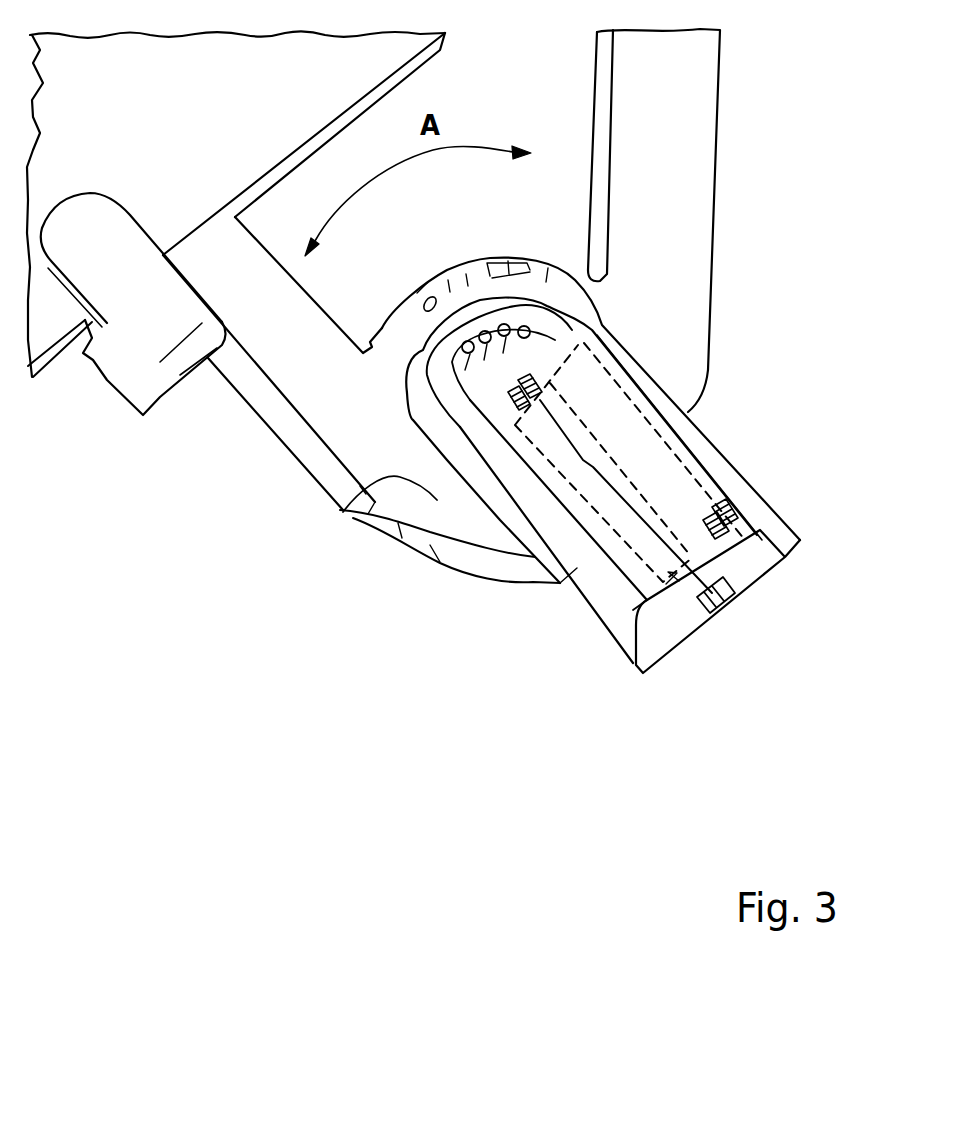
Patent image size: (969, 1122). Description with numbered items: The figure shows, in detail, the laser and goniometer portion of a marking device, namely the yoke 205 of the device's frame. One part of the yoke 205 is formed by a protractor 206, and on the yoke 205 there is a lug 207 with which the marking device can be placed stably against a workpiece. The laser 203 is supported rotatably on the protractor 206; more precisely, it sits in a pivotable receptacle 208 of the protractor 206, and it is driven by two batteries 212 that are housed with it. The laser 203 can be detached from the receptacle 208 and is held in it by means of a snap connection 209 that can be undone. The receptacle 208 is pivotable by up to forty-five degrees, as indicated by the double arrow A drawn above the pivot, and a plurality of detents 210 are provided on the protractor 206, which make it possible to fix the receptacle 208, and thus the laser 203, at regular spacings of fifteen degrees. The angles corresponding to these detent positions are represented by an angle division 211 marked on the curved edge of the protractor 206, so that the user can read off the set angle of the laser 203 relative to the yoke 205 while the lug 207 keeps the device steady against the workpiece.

The laser 203 is at (642, 606).
The yoke 205 is at (672, 155).
The protractor 206 is at (343, 513).
The lug 207 is at (138, 300).
The pivotable receptacle 208 is at (560, 583).
The snap connection 209 is at (725, 595).
The detents 210 is at (530, 330).
The angle division 211 is at (450, 278).
The batteries 212 is at (710, 475).